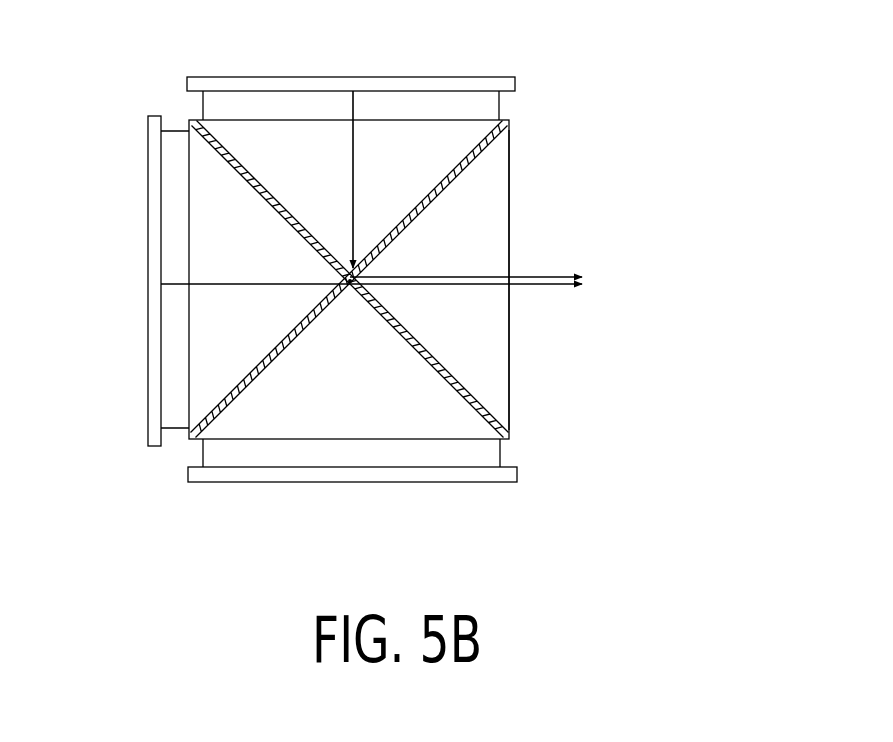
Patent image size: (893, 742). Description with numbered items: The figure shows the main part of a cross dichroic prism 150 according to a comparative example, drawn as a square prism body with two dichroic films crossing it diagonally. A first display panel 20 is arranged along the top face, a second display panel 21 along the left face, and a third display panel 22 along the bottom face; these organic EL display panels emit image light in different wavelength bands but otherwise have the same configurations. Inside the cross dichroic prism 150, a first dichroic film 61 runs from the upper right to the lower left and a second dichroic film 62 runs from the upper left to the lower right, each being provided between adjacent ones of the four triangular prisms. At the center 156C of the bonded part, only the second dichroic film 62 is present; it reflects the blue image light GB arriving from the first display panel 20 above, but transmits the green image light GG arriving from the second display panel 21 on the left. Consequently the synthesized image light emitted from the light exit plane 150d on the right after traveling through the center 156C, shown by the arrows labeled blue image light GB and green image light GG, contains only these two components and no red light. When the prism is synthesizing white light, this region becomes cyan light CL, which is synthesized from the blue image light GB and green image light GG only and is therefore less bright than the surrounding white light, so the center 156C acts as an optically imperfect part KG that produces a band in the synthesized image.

The first display panel 20 is at (522, 84).
The second display panel 21 is at (152, 110).
The third display panel 22 is at (178, 477).
The cross dichroic prism 150 is at (522, 115).
The light exit plane 150d is at (509, 348).
The first dichroic film 61 is at (437, 197).
The second dichroic film 62 is at (477, 395).
The center of the bonded part 156C is at (346, 300).
The blue image light GB is at (353, 163).
The green image light GG is at (220, 286).
The optically imperfect part KG is at (338, 280).
The cyan light CL is at (640, 237).